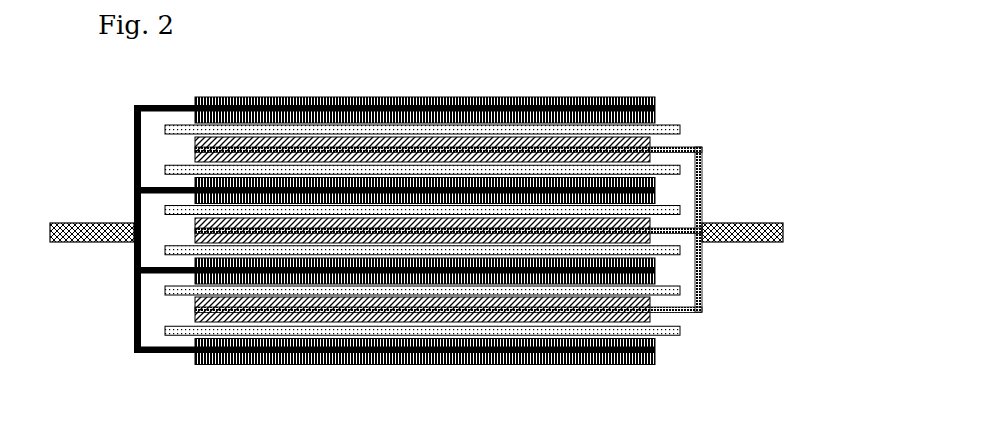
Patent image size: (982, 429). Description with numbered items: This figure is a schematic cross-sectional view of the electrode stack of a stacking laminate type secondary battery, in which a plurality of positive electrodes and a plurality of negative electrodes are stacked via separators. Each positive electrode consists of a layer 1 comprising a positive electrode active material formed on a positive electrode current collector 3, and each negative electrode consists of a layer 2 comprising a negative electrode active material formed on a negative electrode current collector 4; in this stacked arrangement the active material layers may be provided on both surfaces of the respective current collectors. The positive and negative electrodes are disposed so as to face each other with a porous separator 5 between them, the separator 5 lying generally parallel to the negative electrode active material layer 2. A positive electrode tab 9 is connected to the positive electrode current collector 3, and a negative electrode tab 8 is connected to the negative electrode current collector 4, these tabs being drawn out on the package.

The layer comprising a positive electrode active material 1 is at (188, 320).
The layer comprising a negative electrode active material 2 is at (262, 90).
The positive electrode current collector 3 is at (708, 297).
The negative electrode current collector 4 is at (130, 295).
The porous separator 5 is at (672, 113).
The negative electrode tab 8 is at (110, 213).
The positive electrode tab 9 is at (728, 213).